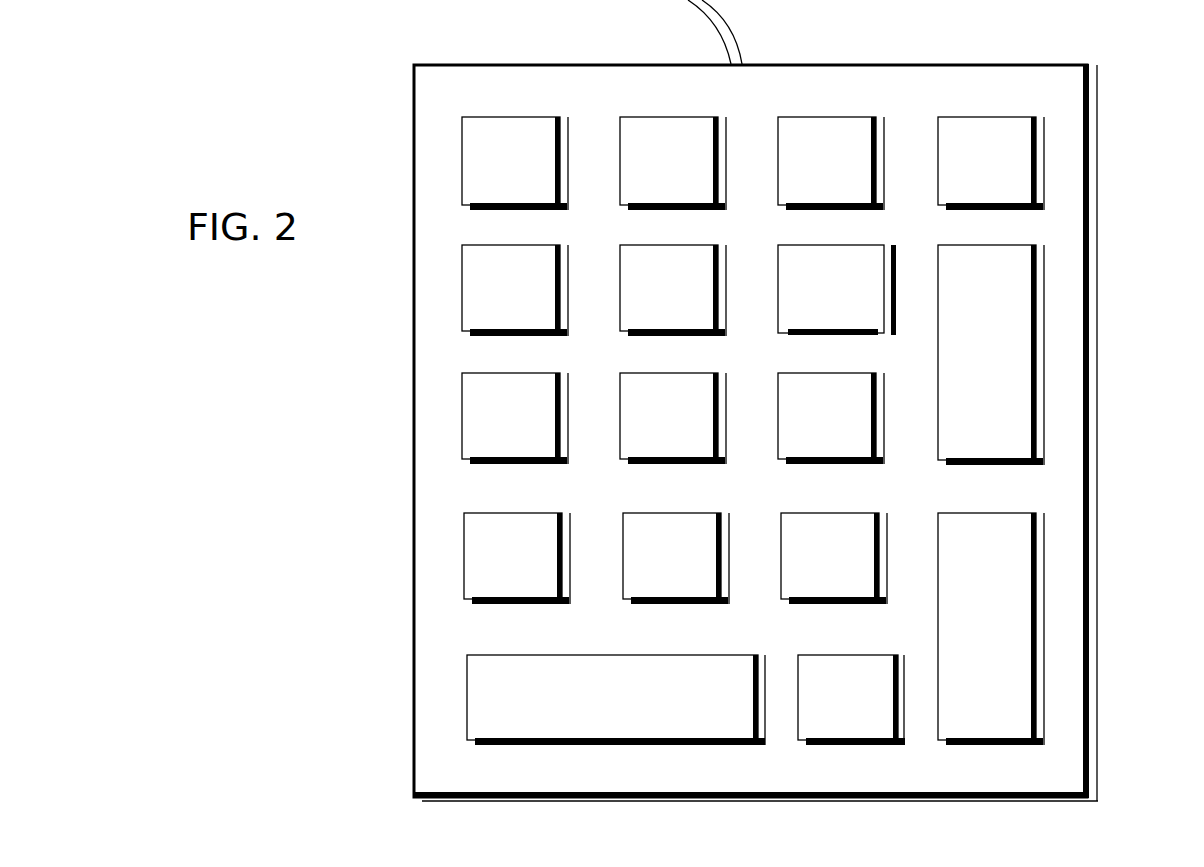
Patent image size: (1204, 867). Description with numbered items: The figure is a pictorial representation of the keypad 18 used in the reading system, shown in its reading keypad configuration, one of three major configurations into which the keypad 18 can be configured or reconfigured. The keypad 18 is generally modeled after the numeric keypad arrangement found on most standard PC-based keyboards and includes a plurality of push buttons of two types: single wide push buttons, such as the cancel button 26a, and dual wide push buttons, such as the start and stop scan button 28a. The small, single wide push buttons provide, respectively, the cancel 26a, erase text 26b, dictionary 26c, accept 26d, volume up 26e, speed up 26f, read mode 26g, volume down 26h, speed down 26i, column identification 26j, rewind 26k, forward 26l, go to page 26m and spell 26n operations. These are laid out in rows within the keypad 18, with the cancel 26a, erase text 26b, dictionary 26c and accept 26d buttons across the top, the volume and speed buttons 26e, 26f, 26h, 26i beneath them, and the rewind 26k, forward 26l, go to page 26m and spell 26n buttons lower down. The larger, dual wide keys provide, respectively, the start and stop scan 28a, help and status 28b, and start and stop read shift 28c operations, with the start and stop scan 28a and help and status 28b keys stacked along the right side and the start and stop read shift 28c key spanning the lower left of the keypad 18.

The keypad 18 is at (405, 90).
The cancel push button 26a is at (495, 108).
The erase text push button 26b is at (623, 117).
The dictionary push button 26c is at (805, 108).
The accept push button 26d is at (945, 117).
The volume up push button 26e is at (475, 259).
The speed up push button 26f is at (625, 325).
The read mode push button 26g is at (872, 257).
The volume down push button 26h is at (453, 430).
The speed down push button 26i is at (618, 460).
The column identification push button 26j is at (817, 472).
The rewind push button 26k is at (465, 543).
The forward push button 26l is at (617, 615).
The go to page push button 26m is at (808, 613).
The spell push button 26n is at (818, 763).
The start and stop scan push button 28a is at (1053, 343).
The help and status push button 28b is at (1040, 598).
The start and stop read shift push button 28c is at (465, 713).